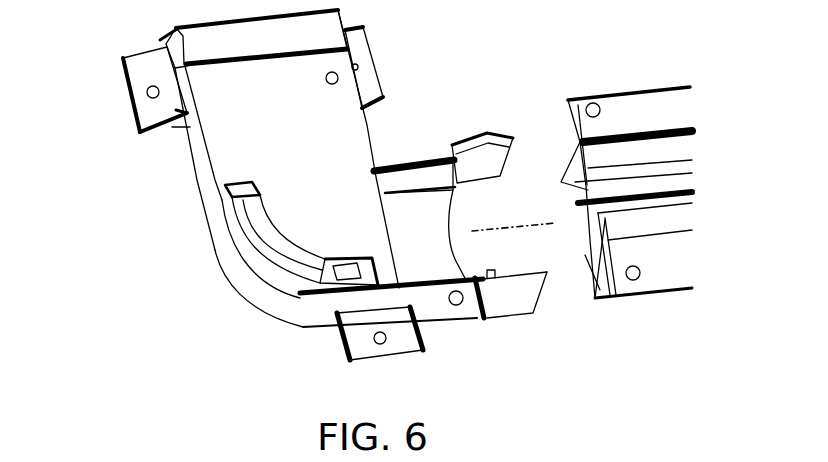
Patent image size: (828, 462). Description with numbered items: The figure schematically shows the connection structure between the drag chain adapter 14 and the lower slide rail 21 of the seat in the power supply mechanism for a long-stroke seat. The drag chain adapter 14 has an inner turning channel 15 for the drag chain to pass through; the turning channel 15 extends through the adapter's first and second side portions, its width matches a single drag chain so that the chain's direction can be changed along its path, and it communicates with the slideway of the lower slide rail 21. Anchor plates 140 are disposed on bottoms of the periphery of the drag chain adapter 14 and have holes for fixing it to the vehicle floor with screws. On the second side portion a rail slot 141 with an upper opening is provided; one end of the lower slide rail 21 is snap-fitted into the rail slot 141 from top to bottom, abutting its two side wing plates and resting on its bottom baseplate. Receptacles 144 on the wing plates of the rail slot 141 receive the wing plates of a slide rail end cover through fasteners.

The drag chain adapter 14 is at (205, 163).
The turning channel 15 is at (256, 245).
The lower slide rail of the seat 21 is at (641, 102).
The anchor plates 140 is at (142, 77).
The rail slot 141 is at (473, 145).
The receptacles 144 is at (461, 300).